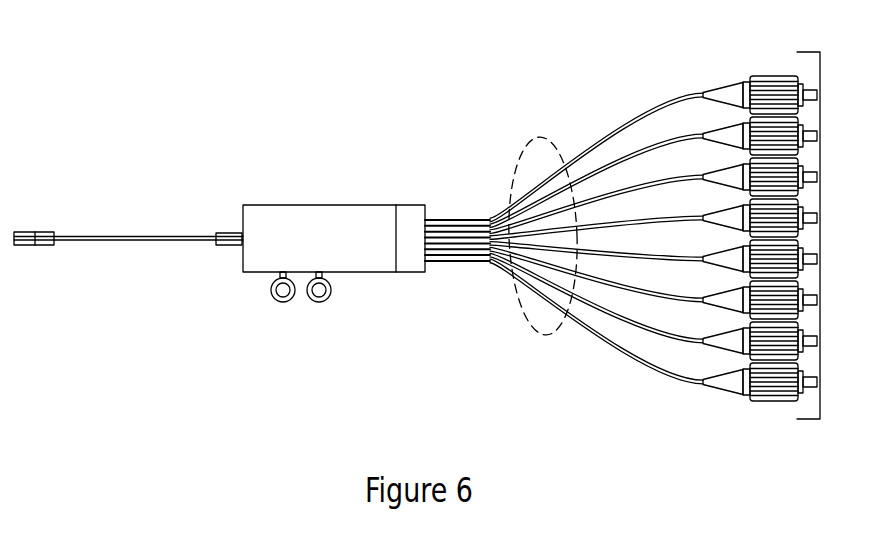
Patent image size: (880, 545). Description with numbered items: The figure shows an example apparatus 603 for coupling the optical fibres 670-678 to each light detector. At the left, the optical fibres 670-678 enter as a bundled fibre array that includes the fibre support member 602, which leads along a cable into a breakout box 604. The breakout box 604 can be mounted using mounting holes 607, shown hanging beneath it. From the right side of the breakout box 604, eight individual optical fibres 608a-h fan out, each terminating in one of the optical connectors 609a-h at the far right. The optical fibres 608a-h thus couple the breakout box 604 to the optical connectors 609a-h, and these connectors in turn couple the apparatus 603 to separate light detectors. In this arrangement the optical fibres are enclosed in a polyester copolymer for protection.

The fibre support member 602 is at (28, 257).
The apparatus 603 is at (368, 102).
The breakout box 604 is at (377, 288).
The mounting holes 607 is at (330, 309).
The optical fibres 608a-h is at (513, 193).
The optical connectors 609a-h is at (813, 420).
The optical fibres 670-678 is at (78, 257).